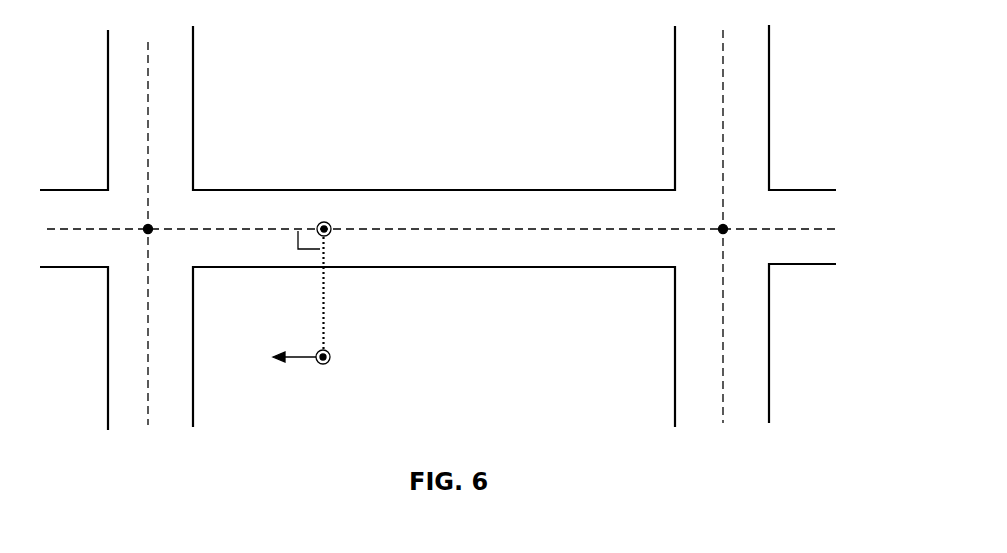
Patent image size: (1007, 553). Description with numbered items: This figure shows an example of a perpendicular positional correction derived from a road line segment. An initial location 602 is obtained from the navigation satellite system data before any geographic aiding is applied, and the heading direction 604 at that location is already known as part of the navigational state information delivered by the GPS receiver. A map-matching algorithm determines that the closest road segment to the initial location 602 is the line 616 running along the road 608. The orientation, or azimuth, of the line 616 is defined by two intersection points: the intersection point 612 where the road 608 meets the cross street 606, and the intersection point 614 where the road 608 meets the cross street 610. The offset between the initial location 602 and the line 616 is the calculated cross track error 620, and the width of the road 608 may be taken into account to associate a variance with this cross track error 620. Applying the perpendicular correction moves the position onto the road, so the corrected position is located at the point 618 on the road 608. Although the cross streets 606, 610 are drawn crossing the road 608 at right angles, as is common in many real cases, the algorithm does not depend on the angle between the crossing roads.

The initial location 602 is at (330, 360).
The heading direction 604 is at (294, 360).
The cross street 606 is at (193, 61).
The road 608 is at (415, 190).
The cross street 610 is at (769, 61).
The intersection point 612 is at (150, 225).
The intersection point 614 is at (725, 225).
The line 616 is at (516, 226).
The corrected position point 618 is at (327, 222).
The cross track error 620 is at (326, 297).